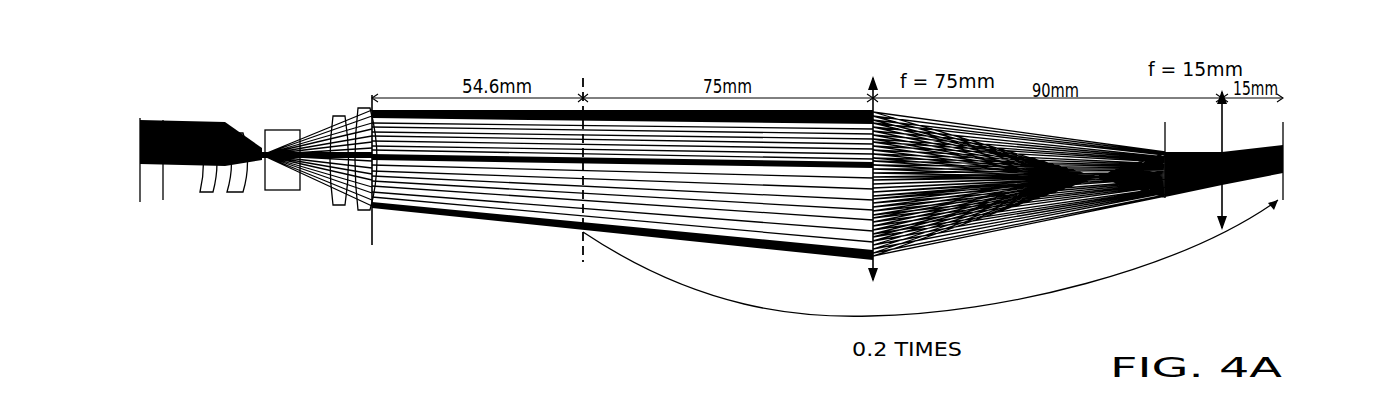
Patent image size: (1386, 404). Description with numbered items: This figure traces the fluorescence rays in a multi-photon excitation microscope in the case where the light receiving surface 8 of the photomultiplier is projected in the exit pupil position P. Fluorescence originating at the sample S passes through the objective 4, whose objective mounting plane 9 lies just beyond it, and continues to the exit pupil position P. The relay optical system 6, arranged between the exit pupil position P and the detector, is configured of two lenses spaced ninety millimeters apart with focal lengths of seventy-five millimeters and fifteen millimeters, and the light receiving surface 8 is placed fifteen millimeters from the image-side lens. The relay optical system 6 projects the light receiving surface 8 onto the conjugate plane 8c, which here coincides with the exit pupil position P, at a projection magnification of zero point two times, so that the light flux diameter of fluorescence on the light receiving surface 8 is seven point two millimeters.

The sample S is at (140, 122).
The objective 4 is at (244, 92).
The objective mounting plane 9 is at (370, 47).
The conjugate plane 8c is at (582, 98).
The exit pupil position P is at (582, 47).
The relay optical system 6 is at (1240, 57).
The light receiving surface 8 is at (1282, 122).